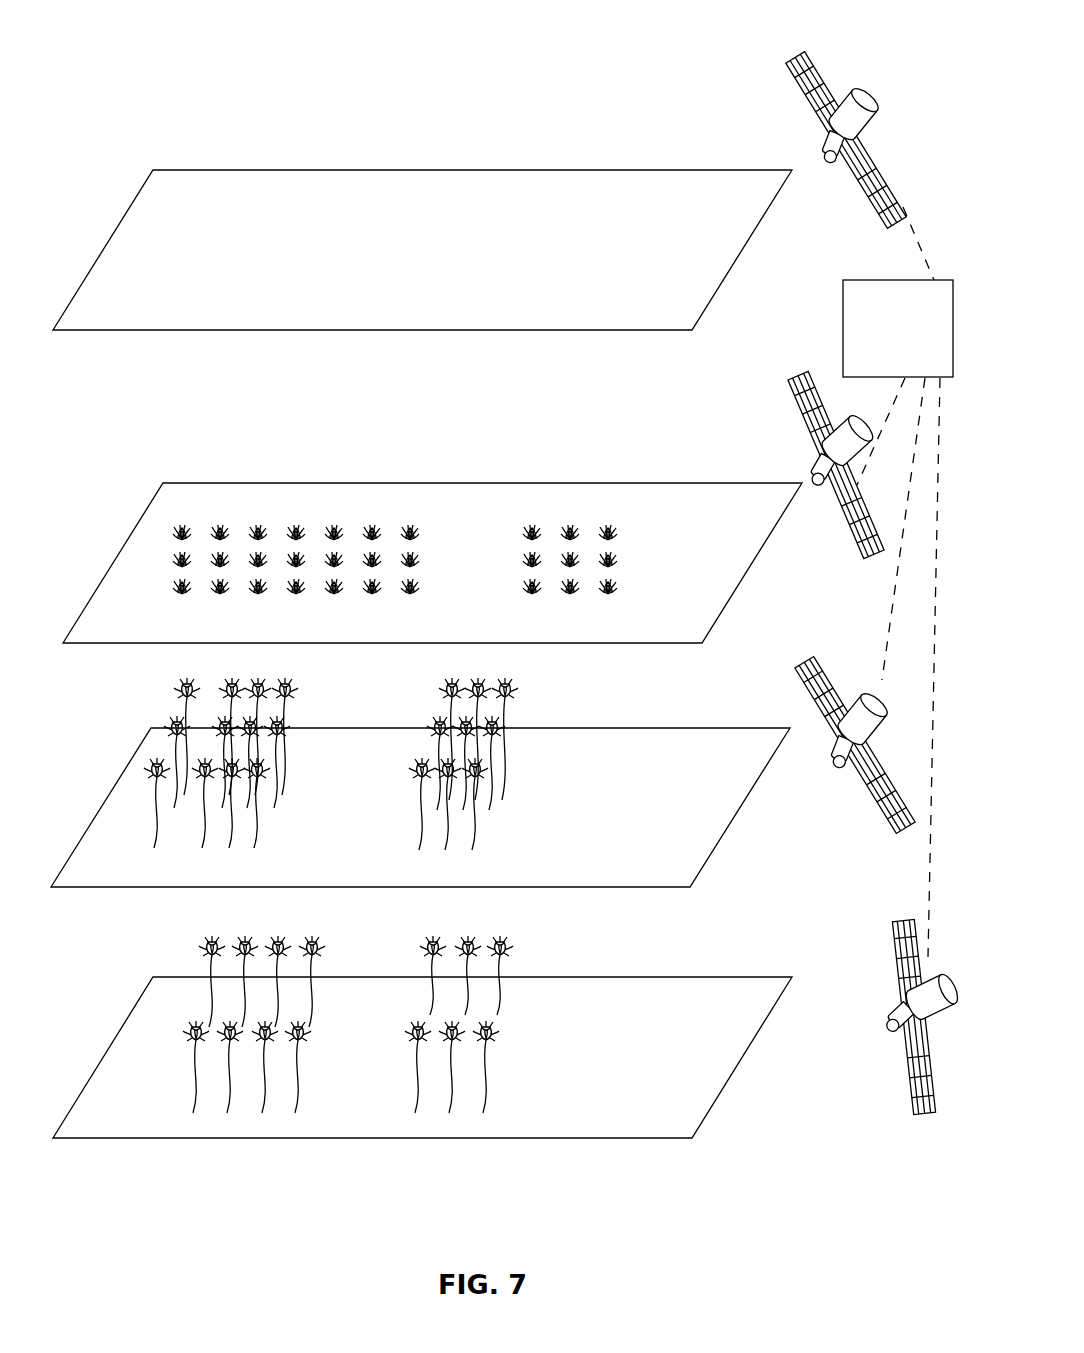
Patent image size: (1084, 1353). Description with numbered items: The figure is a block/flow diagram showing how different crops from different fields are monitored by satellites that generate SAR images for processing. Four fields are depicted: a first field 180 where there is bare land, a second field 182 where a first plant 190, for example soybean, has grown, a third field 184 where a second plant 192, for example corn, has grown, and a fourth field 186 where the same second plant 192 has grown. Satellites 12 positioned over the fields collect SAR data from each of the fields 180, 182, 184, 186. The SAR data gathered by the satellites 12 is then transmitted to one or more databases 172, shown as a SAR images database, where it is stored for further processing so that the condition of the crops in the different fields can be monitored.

The satellites 12 is at (853, 78).
The databases 172 is at (903, 278).
The first field 180 is at (163, 193).
The second field 182 is at (163, 520).
The third field 184 is at (163, 757).
The fourth field 186 is at (163, 1008).
The first plant 190 is at (617, 530).
The second plant 192 is at (512, 695).